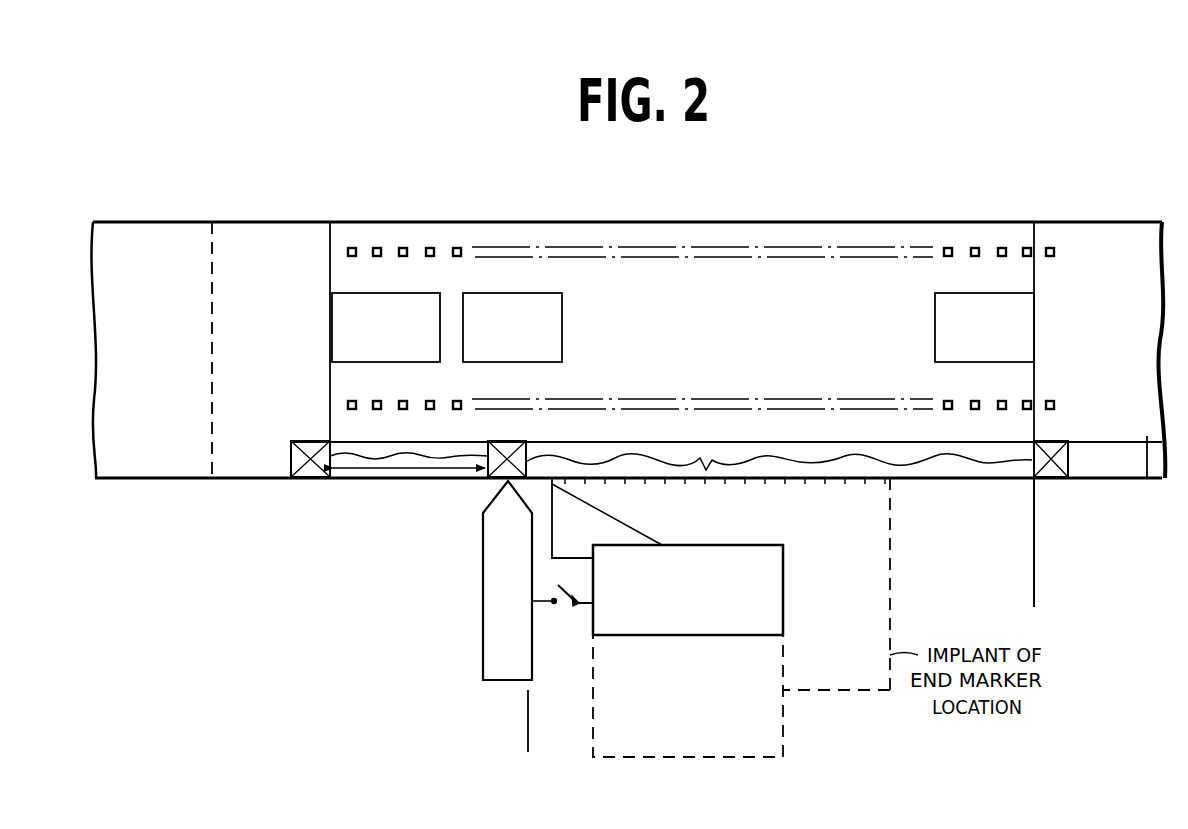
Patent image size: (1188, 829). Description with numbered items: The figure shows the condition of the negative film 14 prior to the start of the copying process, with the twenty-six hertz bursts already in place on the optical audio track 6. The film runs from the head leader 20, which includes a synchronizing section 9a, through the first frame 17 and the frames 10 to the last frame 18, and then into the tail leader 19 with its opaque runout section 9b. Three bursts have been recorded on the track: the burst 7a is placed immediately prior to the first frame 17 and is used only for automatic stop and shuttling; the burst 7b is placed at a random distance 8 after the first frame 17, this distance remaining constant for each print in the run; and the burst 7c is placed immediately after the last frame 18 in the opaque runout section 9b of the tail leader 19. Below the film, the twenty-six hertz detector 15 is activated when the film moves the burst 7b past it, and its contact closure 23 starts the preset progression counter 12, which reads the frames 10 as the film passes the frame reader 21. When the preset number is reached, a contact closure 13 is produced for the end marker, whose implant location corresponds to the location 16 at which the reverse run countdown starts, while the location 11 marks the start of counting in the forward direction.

The head leader 20 is at (122, 236).
The synchronizing section of head leader 9a is at (290, 236).
The opaque runout section of tail leader 9b is at (1118, 243).
The first frame 17 is at (388, 298).
The last frame 18 is at (993, 312).
The negative film 14 is at (940, 214).
The 26 Hz burst before first frame 7a is at (310, 480).
The 26 Hz burst random distance after first frame 7b is at (501, 480).
The 26 Hz burst after last frame 7c is at (1055, 480).
The random distance 8 is at (389, 480).
The frames 10 is at (702, 481).
The optical audio track 6 is at (958, 480).
The tail leader 19 is at (1147, 480).
The location of start of reverse run countdown 16 is at (1036, 597).
The 26 Hz detector 15 is at (483, 612).
The frame reader 21 is at (623, 533).
The 26 Hz detector contact closure 23 is at (574, 606).
The preset progression counter 12 is at (785, 587).
The contact closure when preset is reached 13 is at (745, 758).
The location of start of counting in forward direction 11 is at (528, 735).